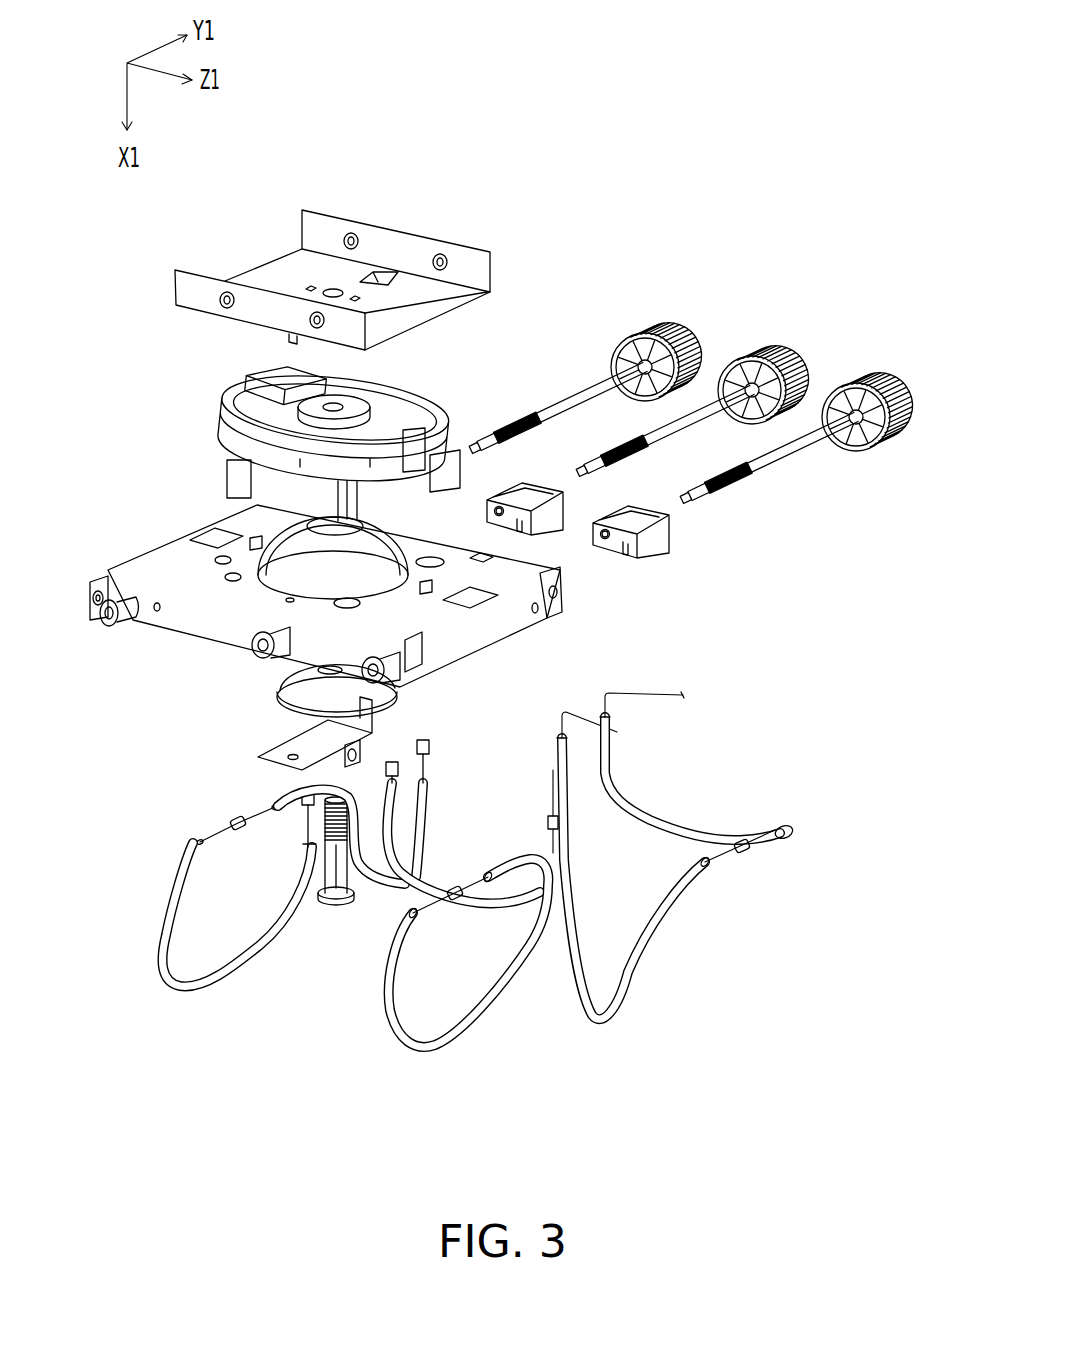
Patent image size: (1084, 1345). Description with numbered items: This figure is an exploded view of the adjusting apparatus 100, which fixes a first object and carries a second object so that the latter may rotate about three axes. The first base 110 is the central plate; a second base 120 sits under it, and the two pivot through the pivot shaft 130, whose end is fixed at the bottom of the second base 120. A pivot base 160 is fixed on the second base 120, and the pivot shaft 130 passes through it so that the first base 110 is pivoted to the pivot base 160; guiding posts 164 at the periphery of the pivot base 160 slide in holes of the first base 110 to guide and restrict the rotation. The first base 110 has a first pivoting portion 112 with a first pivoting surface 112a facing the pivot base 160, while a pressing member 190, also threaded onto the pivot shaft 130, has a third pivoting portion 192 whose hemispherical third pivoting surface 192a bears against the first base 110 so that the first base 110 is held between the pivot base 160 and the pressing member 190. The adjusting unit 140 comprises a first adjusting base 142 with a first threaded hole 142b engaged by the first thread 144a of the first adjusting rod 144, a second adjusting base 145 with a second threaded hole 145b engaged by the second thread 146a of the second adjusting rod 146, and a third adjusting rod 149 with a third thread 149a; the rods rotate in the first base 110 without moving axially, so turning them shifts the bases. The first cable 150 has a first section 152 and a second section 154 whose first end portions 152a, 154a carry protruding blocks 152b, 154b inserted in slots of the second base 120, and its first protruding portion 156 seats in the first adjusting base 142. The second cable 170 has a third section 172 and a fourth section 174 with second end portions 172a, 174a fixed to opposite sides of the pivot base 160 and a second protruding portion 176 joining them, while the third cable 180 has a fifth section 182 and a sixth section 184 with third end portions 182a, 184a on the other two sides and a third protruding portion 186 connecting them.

The adjusting apparatus 100 is at (856, 1080).
The first base 110 is at (326, 570).
The first pivoting portion 112 is at (278, 526).
The first pivoting surface 112a is at (300, 531).
The second base 120 is at (263, 275).
The pivot shaft 130 is at (333, 885).
The adjusting unit 140 is at (670, 470).
The first adjusting base 142 is at (652, 552).
The first threaded hole 142b is at (600, 550).
The first adjusting rod 144 is at (780, 438).
The first thread 144a is at (763, 444).
The second adjusting base 145 is at (536, 506).
The second threaded hole 145b is at (492, 520).
The second adjusting rod 146 is at (677, 411).
The second thread 146a is at (659, 418).
The third adjusting rod 149 is at (585, 388).
The third thread 149a is at (505, 418).
The first cable 150 is at (686, 816).
The first section 152 is at (633, 827).
The first end portion 152a is at (628, 737).
The protruding block 152b is at (578, 717).
The second section 154 is at (707, 769).
The first end portion 154a is at (687, 696).
The protruding block 154b is at (630, 687).
The first protruding portion 156 is at (740, 878).
The pivot base 160 is at (228, 440).
The guiding posts 164 is at (352, 497).
The second cable 170 is at (472, 922).
The third section 172 is at (467, 897).
The second end portion 172a is at (397, 750).
The fourth section 174 is at (473, 918).
The second end portion 174a is at (556, 798).
The second protruding portion 176 is at (456, 898).
The third cable 180 is at (332, 897).
The fifth section 182 is at (239, 924).
The third end portion 182a is at (292, 820).
The sixth section 184 is at (389, 872).
The third end portion 184a is at (447, 752).
The third protruding portion 186 is at (238, 835).
The pressing member 190 is at (273, 690).
The third pivoting portion 192 is at (272, 676).
The third pivoting surface 192a is at (246, 669).